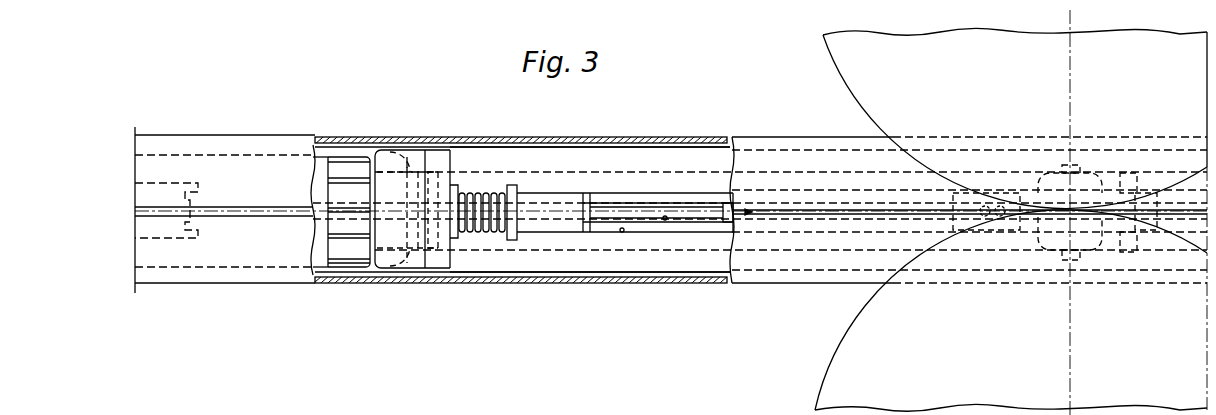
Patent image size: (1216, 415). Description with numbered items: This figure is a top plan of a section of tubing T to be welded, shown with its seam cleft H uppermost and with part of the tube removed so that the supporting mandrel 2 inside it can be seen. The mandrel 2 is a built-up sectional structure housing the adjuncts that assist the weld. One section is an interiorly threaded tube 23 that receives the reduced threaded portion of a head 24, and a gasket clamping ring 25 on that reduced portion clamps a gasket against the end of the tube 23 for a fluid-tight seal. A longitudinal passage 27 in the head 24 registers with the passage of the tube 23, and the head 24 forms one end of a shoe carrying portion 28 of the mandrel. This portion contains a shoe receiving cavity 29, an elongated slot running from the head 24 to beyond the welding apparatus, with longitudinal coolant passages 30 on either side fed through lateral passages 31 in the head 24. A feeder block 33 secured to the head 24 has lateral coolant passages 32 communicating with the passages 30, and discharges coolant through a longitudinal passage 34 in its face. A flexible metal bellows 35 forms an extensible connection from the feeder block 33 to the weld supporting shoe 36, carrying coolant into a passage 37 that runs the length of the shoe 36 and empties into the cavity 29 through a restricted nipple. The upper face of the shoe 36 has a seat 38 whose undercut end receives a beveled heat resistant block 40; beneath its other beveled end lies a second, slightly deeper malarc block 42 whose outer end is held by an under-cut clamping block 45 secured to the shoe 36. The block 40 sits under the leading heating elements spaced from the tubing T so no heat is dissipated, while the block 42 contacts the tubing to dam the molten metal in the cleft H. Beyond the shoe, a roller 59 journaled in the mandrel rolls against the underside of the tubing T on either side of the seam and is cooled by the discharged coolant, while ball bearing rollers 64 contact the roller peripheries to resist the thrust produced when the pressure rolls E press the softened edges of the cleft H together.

The seam cleft H is at (268, 206).
The tubing T is at (426, 148).
The pressure rolls E is at (855, 77).
The mandrel 2 is at (322, 262).
The tube 23 is at (316, 167).
The head 24 is at (395, 250).
The gasket clamping ring 25 is at (357, 253).
The longitudinal passage 27 is at (247, 219).
The shoe carrying portion 28 is at (695, 243).
The shoe receiving cavity 29 is at (622, 232).
The coolant passages 30 is at (570, 252).
The lateral passages 31 is at (408, 177).
The lateral coolant passages 32 is at (432, 253).
The feeder block 33 is at (448, 262).
The longitudinal passage 34 is at (455, 176).
The flexible metal bellows 35 is at (481, 193).
The weld supporting shoe 36 is at (563, 197).
The passage 37 is at (563, 212).
The seat 38 is at (665, 220).
The heat resistant block 40 is at (653, 207).
The second malarc block 42 is at (731, 208).
The clamping block 45 is at (977, 200).
The roller 59 is at (1083, 185).
The ball bearing rollers 64 is at (1138, 200).